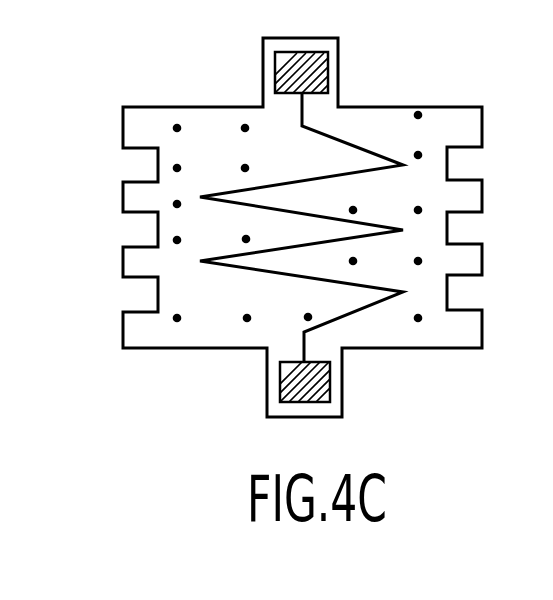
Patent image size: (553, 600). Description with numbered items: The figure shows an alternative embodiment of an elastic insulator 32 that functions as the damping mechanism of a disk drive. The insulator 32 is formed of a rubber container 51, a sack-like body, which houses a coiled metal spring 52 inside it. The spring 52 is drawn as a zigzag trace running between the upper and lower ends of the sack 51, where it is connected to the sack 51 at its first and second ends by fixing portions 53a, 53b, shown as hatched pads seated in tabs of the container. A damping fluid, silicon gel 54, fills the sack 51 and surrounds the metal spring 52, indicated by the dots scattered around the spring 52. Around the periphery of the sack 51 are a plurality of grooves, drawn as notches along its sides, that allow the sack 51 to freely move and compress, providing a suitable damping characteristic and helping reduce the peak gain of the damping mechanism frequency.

The elastic insulator 32 is at (81, 205).
The rubber container 51 is at (483, 323).
The coiled metal spring 52 is at (358, 143).
The fixing portion 53a is at (322, 70).
The fixing portion 53b is at (329, 390).
The silicon gel 54 is at (213, 132).